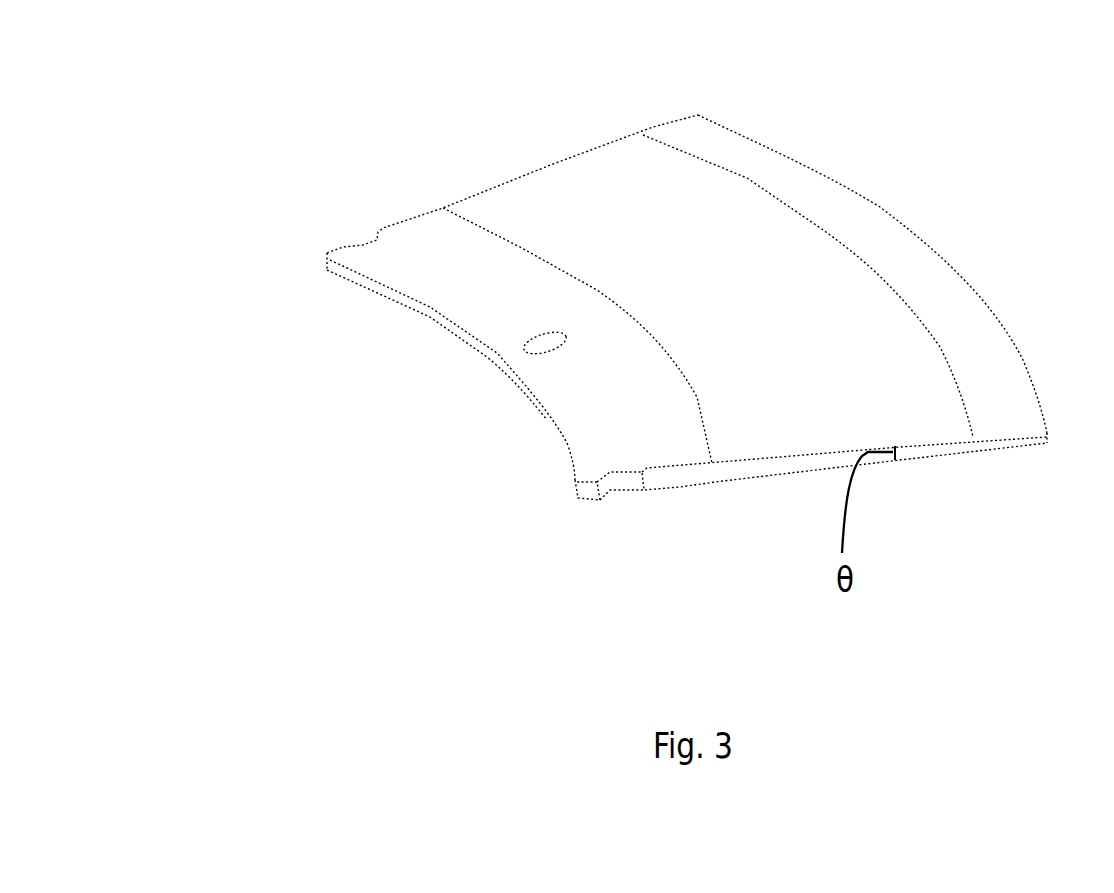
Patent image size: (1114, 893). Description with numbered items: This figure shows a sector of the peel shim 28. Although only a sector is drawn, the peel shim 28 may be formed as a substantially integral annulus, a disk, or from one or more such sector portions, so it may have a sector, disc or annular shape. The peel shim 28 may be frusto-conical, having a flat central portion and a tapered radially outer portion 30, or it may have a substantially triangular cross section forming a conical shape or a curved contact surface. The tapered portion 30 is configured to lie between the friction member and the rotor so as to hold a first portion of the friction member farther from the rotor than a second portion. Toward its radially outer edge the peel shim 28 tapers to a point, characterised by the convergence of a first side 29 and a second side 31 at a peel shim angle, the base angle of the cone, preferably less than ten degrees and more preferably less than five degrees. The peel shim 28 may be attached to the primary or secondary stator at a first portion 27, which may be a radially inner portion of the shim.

The first portion 27 is at (553, 371).
The peel shim 28 is at (860, 137).
The first side 29 is at (700, 273).
The tapered radially outer portion 30 is at (693, 397).
The second side 31 is at (757, 483).